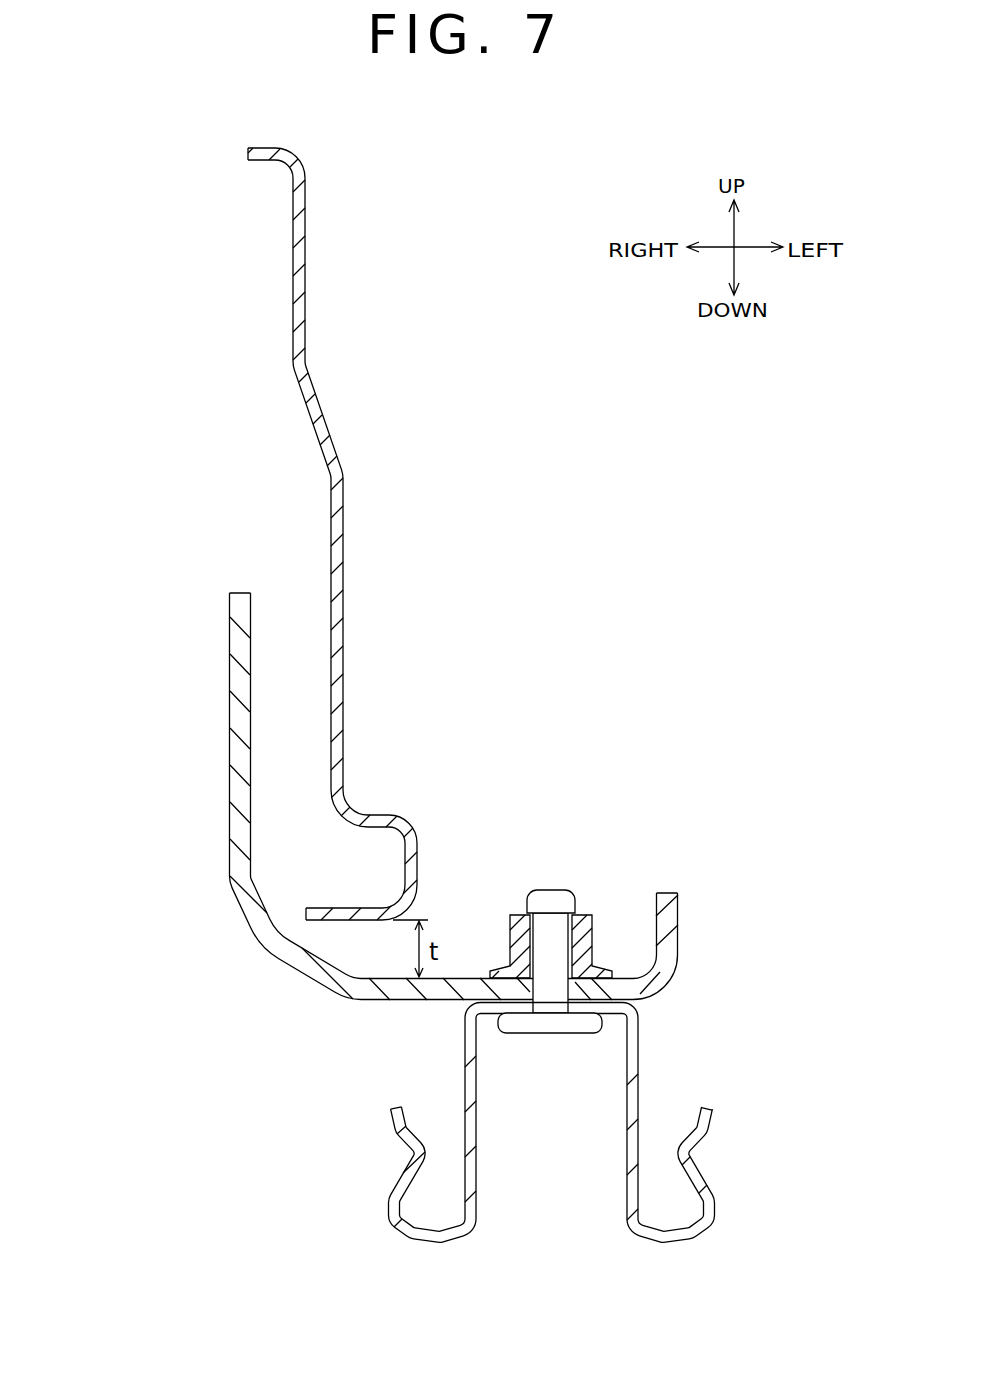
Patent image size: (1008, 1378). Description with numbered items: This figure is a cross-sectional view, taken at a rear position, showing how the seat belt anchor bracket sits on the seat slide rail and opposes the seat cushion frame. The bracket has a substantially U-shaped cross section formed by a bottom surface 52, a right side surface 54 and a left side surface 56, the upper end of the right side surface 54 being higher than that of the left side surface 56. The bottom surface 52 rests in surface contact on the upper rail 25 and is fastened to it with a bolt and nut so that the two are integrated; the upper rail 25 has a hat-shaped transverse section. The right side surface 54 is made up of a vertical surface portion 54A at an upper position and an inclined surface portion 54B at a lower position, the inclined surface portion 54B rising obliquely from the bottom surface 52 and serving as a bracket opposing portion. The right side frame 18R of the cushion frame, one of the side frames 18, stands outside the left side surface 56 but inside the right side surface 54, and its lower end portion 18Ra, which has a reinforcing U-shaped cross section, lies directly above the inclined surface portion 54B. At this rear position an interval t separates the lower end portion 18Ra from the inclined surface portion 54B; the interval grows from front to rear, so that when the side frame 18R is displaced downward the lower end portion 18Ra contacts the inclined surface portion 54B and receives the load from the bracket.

The side frame 18 is at (390, 609).
The right side frame 18R is at (390, 609).
The lower end portion 18Ra is at (337, 917).
The right side surface 54 is at (341, 840).
The vertical surface portion 54A is at (237, 837).
The inclined surface portion 54B is at (268, 938).
The bottom surface 52 is at (434, 992).
The left side surface 56 is at (667, 918).
The upper rail 25 is at (632, 1028).